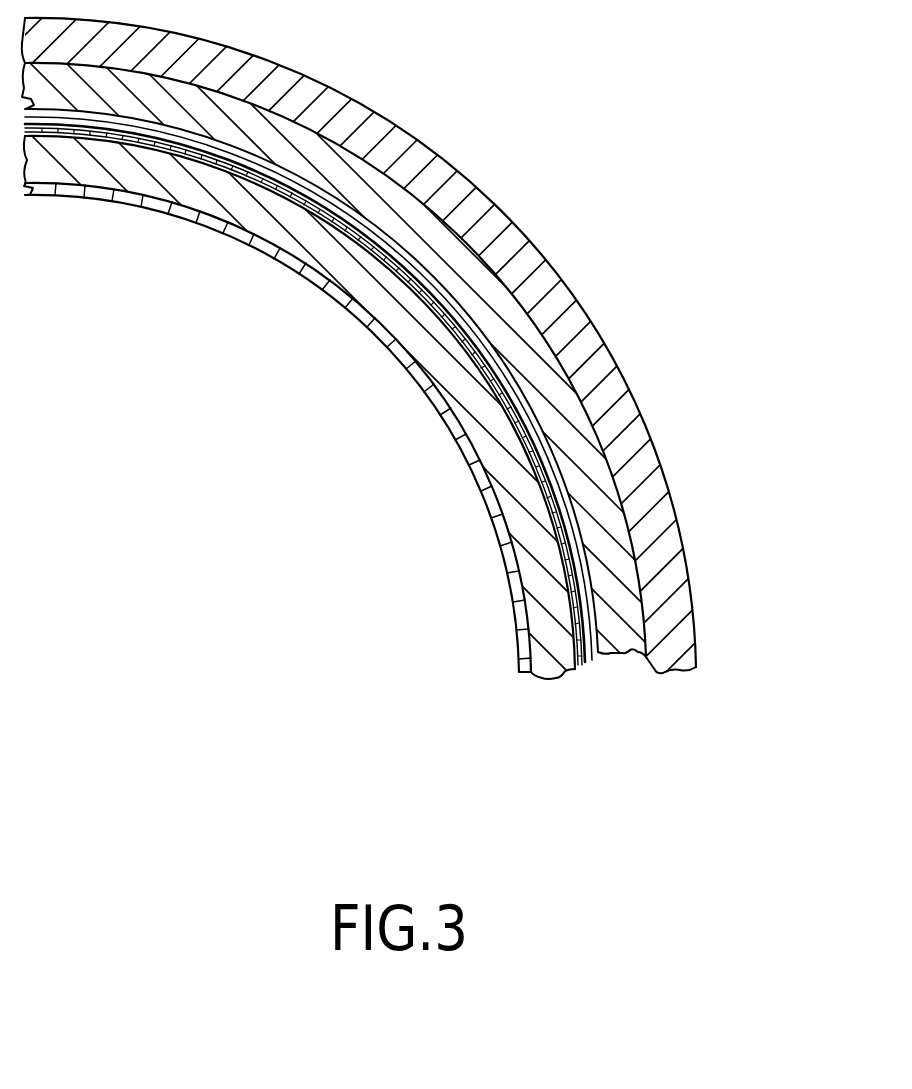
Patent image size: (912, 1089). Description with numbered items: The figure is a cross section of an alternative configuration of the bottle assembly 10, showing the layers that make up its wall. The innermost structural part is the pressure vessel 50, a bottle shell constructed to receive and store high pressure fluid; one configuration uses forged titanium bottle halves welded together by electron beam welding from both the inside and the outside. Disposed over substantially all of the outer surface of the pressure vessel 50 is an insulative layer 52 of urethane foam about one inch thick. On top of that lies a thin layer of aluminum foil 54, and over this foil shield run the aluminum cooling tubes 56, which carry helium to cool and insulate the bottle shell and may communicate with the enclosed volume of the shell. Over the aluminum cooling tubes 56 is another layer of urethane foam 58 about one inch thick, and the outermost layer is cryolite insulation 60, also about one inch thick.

The bottle assembly 10 is at (456, 402).
The pressure vessel 50 is at (530, 673).
The insulative layer 52 is at (560, 678).
The aluminum foil 54 is at (580, 681).
The aluminum cooling tubes 56 is at (594, 660).
The urethane foam 58 is at (633, 537).
The cryolite insulation 60 is at (697, 588).